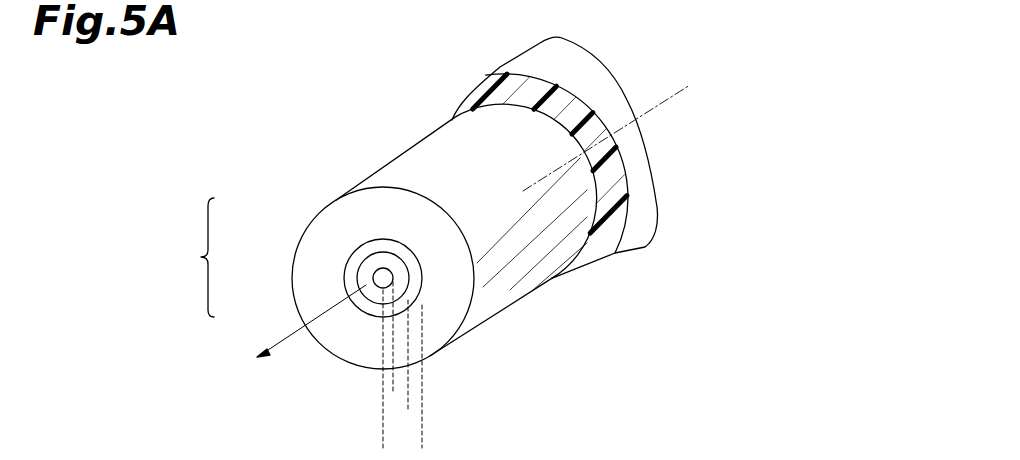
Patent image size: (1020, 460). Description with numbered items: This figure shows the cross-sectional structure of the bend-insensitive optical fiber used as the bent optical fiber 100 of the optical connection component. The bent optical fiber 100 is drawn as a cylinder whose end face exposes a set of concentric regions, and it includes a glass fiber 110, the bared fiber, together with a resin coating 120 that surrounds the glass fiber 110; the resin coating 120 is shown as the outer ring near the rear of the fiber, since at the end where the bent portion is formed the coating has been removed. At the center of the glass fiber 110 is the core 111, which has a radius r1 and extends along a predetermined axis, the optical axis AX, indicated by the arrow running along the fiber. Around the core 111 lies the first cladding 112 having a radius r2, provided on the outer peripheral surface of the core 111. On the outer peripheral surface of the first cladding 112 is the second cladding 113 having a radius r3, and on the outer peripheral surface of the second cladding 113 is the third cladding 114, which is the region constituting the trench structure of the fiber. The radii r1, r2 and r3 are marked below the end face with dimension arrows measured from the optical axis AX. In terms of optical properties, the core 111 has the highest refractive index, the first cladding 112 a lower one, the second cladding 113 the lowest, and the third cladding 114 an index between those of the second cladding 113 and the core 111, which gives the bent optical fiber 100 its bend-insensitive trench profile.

The bent optical fiber 100 is at (405, 110).
The glass fiber 110 is at (315, 278).
The core 111 is at (374, 268).
The first cladding 112 is at (358, 265).
The second cladding 113 is at (357, 252).
The third cladding 114 is at (338, 202).
The resin coating 120 is at (473, 100).
The optical axis AX is at (289, 329).
The radius of the core r1 is at (393, 384).
The radius of the first cladding r2 is at (408, 408).
The radius of the second cladding r3 is at (422, 428).